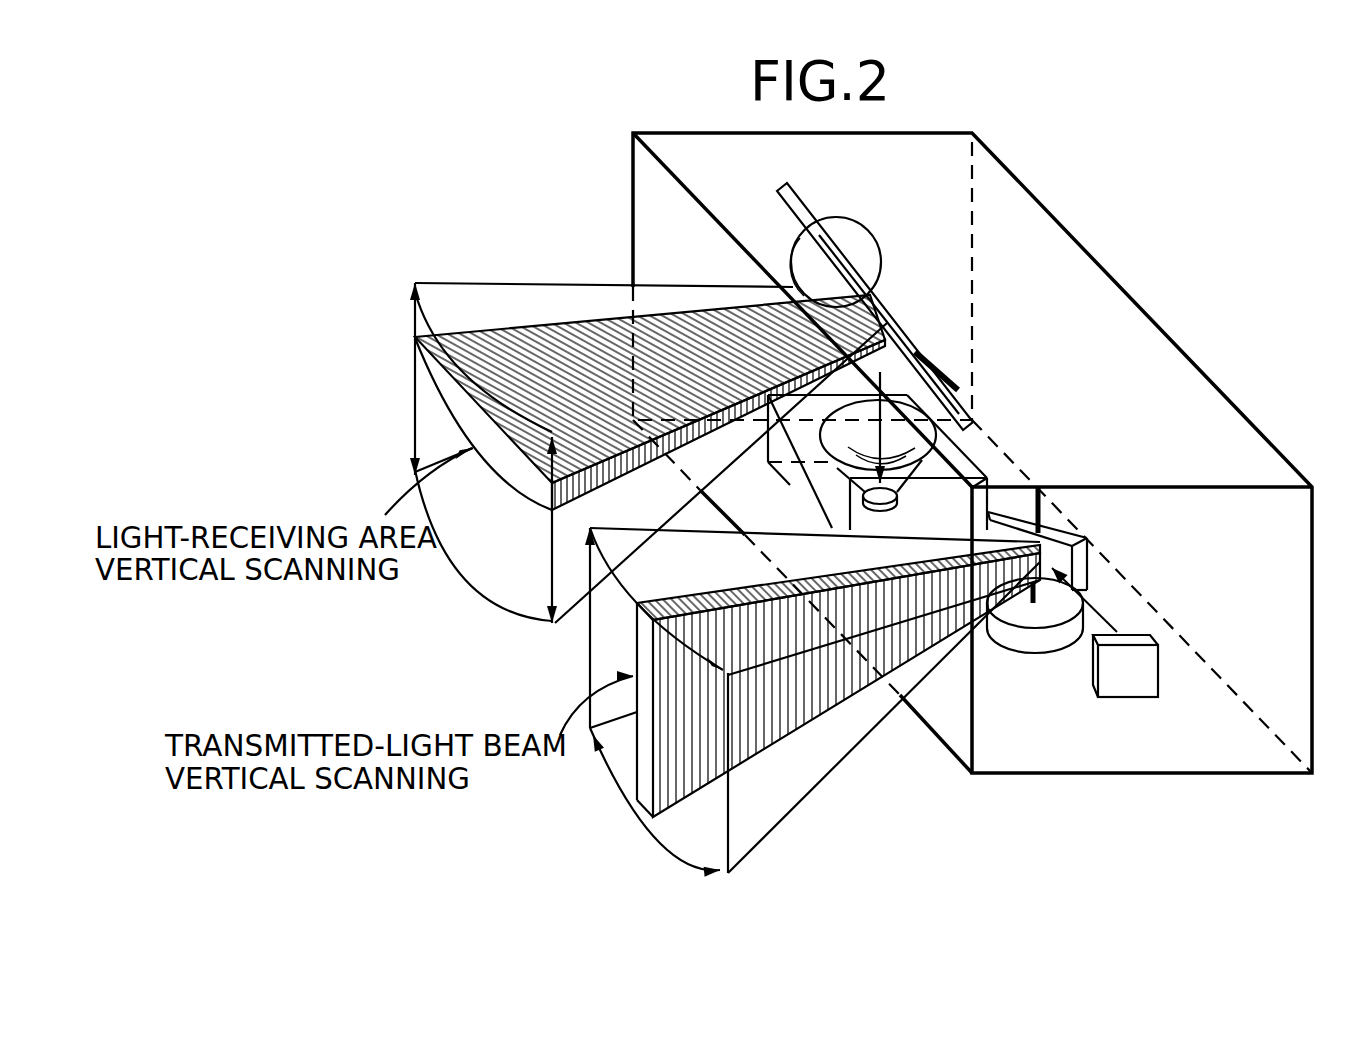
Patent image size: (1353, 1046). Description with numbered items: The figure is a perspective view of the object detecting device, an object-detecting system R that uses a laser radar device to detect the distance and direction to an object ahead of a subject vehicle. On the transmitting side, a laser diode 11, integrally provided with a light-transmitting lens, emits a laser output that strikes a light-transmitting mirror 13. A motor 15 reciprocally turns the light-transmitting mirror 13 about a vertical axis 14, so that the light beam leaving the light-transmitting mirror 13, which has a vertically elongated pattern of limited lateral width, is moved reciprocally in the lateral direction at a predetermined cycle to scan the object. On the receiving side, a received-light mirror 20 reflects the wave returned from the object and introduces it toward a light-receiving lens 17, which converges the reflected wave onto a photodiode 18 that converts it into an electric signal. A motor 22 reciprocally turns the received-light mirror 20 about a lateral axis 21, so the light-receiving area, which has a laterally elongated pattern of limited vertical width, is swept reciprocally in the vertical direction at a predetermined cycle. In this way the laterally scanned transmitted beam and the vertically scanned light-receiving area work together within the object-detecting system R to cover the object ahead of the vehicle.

The laser diode 11 is at (1122, 677).
The light-transmitting mirror 13 is at (1080, 563).
The vertical axis 14 is at (1046, 505).
The motor 15 is at (1031, 636).
The light-receiving lens 17 is at (932, 443).
The photodiode 18 is at (846, 493).
The received-light mirror 20 is at (800, 208).
The lateral axis 21 is at (946, 370).
The motor 22 is at (862, 254).
The object-detecting system R is at (1132, 270).